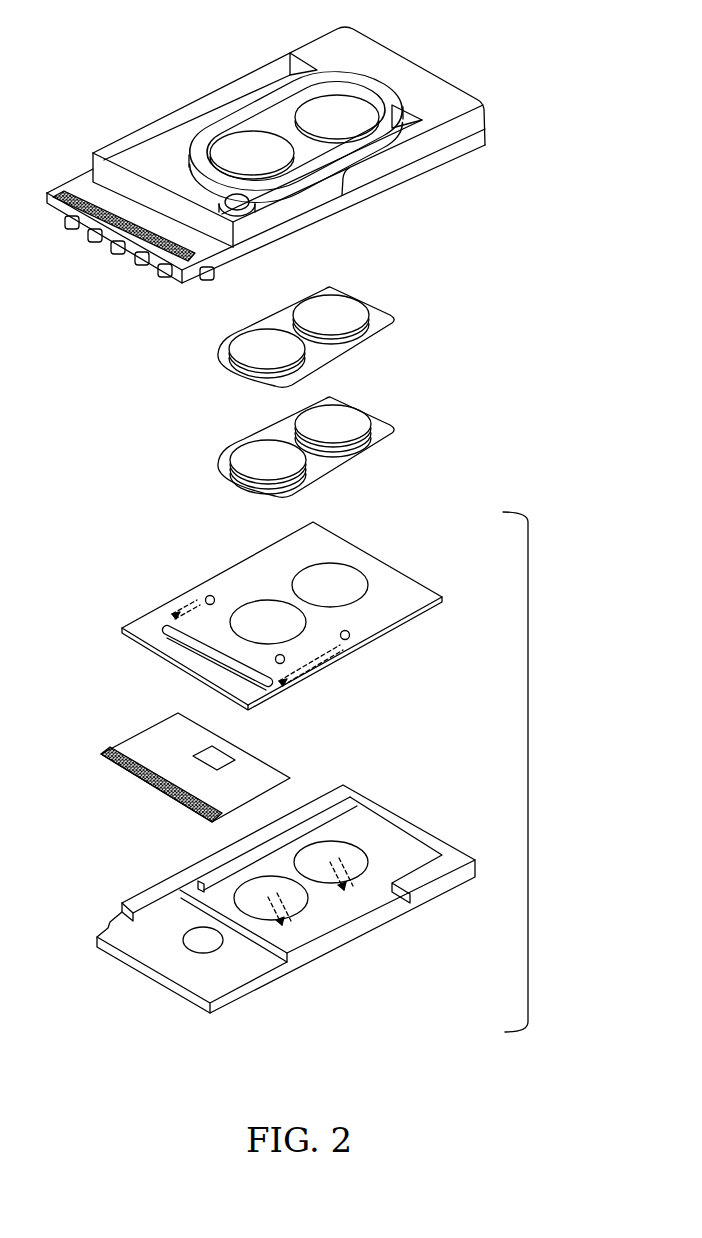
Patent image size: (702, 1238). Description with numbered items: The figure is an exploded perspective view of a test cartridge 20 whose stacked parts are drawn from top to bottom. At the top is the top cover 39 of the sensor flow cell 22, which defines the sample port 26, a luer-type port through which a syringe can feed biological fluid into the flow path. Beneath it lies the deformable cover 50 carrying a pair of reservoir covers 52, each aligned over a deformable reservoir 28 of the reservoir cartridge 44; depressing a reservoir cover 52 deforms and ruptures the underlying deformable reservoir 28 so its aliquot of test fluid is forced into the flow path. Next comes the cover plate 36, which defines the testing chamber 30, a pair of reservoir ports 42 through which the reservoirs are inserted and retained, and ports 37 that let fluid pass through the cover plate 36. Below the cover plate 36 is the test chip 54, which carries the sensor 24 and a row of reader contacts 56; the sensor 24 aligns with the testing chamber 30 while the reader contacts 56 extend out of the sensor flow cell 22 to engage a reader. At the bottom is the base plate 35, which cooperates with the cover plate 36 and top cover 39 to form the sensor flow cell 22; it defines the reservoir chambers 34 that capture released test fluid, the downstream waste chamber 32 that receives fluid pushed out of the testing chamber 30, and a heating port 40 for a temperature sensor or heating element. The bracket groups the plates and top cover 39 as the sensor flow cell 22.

The test cartridge 20 is at (442, 52).
The top cover 39 is at (140, 140).
The sample port 26 is at (245, 206).
The deformable cover 50 is at (380, 311).
The reservoir cover 52 is at (335, 305).
The reservoir cartridge 44 is at (383, 448).
The deformable reservoir 28 is at (345, 415).
The cover plate 36 is at (277, 562).
The reservoir port 42 is at (357, 573).
The testing chamber 30 is at (167, 628).
The port 37 is at (206, 597).
The test chip 54 is at (155, 727).
The reader contact 56 is at (113, 748).
The sensor 24 is at (217, 755).
The base plate 35 is at (358, 932).
The waste chamber 32 is at (405, 857).
The reservoir chamber 34 is at (245, 888).
The heating port 40 is at (190, 938).
The sensor flow cell 22 is at (528, 773).